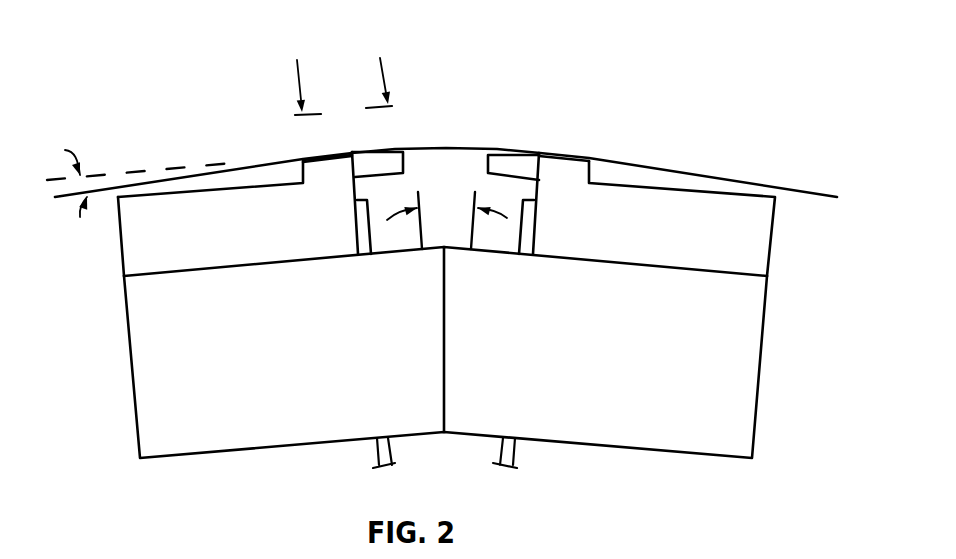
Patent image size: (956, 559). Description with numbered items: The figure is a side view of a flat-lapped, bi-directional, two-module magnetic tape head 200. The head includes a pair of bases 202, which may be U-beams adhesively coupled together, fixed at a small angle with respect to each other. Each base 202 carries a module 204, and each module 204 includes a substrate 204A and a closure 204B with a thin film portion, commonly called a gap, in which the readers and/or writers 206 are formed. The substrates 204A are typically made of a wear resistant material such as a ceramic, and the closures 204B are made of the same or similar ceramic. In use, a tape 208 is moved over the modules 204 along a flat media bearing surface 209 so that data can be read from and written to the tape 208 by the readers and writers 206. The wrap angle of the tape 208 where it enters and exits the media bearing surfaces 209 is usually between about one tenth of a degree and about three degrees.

The magnetic tape head 200 is at (175, 118).
The base 202 is at (128, 345).
The module 204 is at (118, 244).
The substrate 204A is at (182, 220).
The closure 204B is at (488, 164).
The readers and/or writers 206 is at (352, 152).
The tape 208 is at (683, 172).
The media bearing surface 209 is at (310, 153).